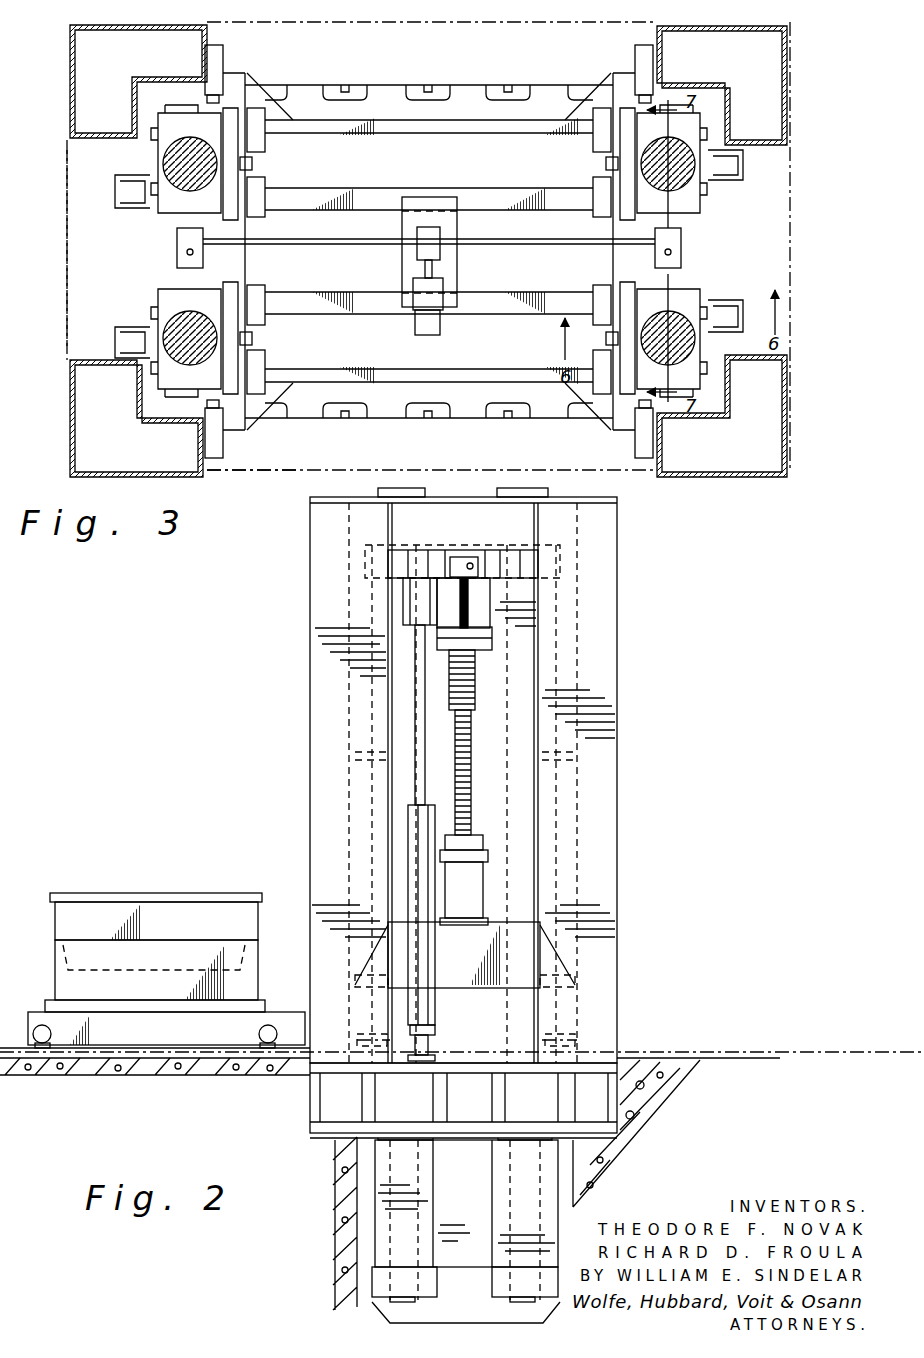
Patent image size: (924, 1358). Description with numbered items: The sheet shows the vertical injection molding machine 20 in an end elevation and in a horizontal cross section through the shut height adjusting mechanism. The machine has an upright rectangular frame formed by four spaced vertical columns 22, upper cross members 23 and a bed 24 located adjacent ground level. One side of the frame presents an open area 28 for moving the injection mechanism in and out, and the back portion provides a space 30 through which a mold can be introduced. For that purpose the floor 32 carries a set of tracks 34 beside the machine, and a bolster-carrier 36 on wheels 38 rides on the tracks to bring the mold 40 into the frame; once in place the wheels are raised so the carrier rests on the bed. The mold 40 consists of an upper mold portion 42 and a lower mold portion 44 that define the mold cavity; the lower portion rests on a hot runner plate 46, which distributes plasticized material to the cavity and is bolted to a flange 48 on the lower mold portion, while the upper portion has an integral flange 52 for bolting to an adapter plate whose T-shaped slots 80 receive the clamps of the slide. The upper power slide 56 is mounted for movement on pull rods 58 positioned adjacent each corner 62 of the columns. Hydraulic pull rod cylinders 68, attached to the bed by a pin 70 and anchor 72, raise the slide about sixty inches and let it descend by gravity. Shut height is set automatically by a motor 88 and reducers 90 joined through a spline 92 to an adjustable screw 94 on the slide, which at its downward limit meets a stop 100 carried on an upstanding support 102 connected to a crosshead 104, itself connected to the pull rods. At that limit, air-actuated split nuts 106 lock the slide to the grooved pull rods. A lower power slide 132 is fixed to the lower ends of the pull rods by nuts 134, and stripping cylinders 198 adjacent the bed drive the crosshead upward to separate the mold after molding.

In FIG. 2, the vertical injection molding machine 20 is at (305, 692).
In FIG. 3, the vertical columns 22 is at (792, 92).
In FIG. 2, the vertical columns 22 is at (312, 617).
In FIG. 3, the upper cross members 23 is at (422, 86).
In FIG. 2, the upper cross members 23 is at (495, 531).
In FIG. 2, the bed 24 is at (478, 1105).
In FIG. 3, the open area 28 is at (108, 284).
In FIG. 3, the space 30 is at (318, 442).
In FIG. 2, the space 30 is at (340, 865).
In FIG. 2, the floor 32 is at (780, 1052).
In FIG. 2, the tracks 34 is at (190, 1054).
In FIG. 2, the bolster-carrier 36 is at (130, 1050).
In FIG. 2, the wheels 38 is at (42, 1026).
In FIG. 2, the mold 40 is at (70, 890).
In FIG. 2, the upper mold portion 42 is at (250, 922).
In FIG. 2, the lower mold portion 44 is at (250, 978).
In FIG. 2, the hot runner plate 46 is at (262, 1015).
In FIG. 2, the flange 48 is at (75, 1002).
In FIG. 2, the integral flange 52 is at (180, 896).
In FIG. 3, the upper power slide 56 is at (385, 95).
In FIG. 2, the upper power slide 56 is at (365, 762).
In FIG. 3, the pull rods 58 is at (180, 170).
In FIG. 2, the pull rods 58 is at (397, 792).
In FIG. 3, the corner 62 is at (228, 78).
In FIG. 3, the pull rod cylinders 68 is at (118, 188).
In FIG. 2, the pull rod cylinders 68 is at (412, 872).
In FIG. 2, the pin 70 is at (432, 1040).
In FIG. 2, the anchor 72 is at (435, 1058).
In FIG. 3, the T-shaped slots 80 is at (495, 96).
In FIG. 3, the motor 88 is at (440, 292).
In FIG. 3, the reducers 90 is at (205, 250).
In FIG. 2, the reducers 90 is at (460, 560).
In FIG. 3, the spline 92 is at (178, 262).
In FIG. 2, the spline 92 is at (470, 625).
In FIG. 2, the adjustable screw 94 is at (475, 705).
In FIG. 2, the stop 100 is at (486, 845).
In FIG. 2, the upstanding support 102 is at (483, 895).
In FIG. 2, the crosshead 104 is at (530, 965).
In FIG. 3, the split nuts 106 is at (188, 128).
In FIG. 2, the split nuts 106 is at (363, 566).
In FIG. 2, the lower power slide 132 is at (485, 1200).
In FIG. 2, the nuts 134 is at (375, 1285).
In FIG. 2, the stripping cylinders 198 is at (578, 1045).